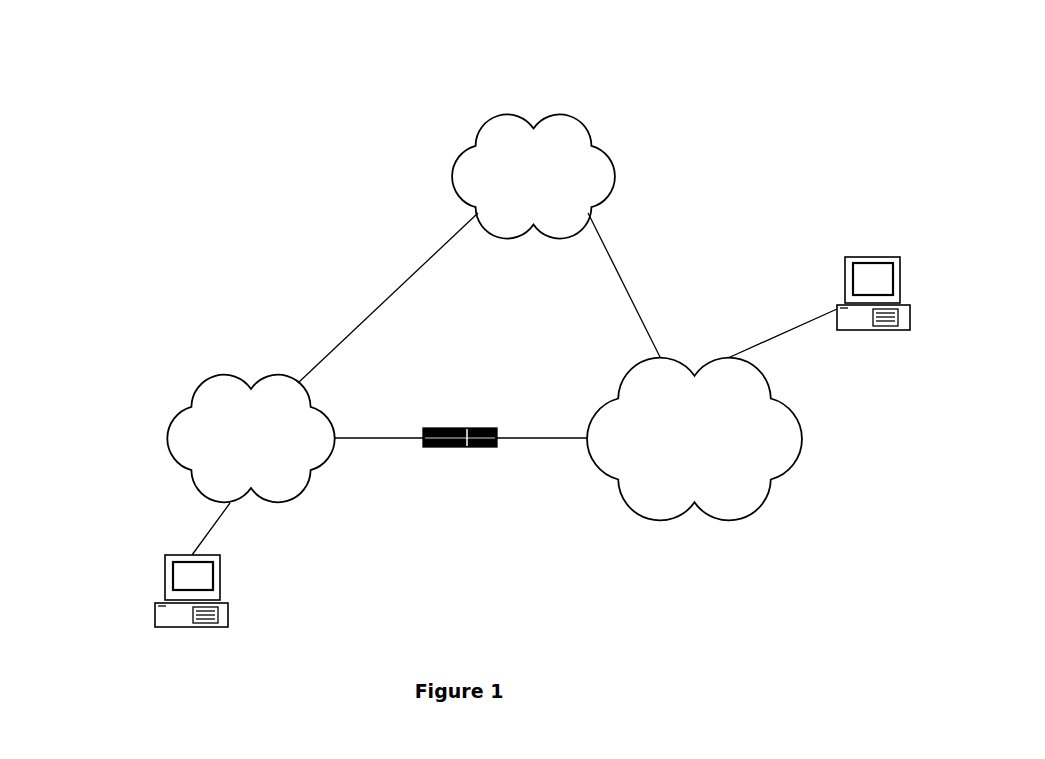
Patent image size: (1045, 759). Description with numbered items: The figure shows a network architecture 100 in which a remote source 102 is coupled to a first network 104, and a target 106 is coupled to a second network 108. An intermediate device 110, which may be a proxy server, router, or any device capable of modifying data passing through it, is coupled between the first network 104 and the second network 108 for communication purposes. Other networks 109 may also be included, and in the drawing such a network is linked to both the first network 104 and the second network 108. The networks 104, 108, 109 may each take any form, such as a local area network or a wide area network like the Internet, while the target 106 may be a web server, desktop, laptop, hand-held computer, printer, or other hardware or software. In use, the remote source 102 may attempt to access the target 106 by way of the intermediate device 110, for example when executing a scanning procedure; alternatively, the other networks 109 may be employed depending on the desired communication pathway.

The network architecture 100 is at (152, 296).
The remote source 102 is at (153, 603).
The first network 104 is at (275, 376).
The target 106 is at (873, 257).
The second network 108 is at (802, 437).
The other networks 109 is at (515, 115).
The intermediate device 110 is at (462, 428).